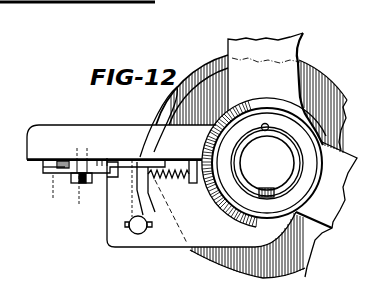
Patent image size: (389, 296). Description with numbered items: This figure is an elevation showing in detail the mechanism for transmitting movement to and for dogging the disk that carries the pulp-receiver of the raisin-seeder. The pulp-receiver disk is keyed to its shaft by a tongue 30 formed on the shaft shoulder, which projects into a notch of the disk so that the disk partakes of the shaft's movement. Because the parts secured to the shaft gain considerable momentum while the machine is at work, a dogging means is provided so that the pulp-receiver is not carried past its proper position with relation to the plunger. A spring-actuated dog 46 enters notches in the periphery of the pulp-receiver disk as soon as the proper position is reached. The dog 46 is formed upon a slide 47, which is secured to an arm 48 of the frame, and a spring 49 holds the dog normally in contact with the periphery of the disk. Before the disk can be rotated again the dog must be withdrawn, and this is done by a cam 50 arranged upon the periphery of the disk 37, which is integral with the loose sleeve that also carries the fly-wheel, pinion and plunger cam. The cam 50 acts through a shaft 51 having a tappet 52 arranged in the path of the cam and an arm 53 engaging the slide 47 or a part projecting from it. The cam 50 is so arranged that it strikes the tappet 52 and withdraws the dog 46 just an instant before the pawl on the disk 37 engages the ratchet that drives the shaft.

The tongue 30 is at (263, 195).
The disk 37 is at (323, 230).
The dog 46 is at (54, 170).
The slide 47 is at (92, 159).
The arm 48 is at (121, 142).
The spring 49 is at (173, 183).
The cam 50 is at (211, 76).
The shaft 51 is at (133, 229).
The tappet 52 is at (163, 106).
The arm 53 is at (148, 192).